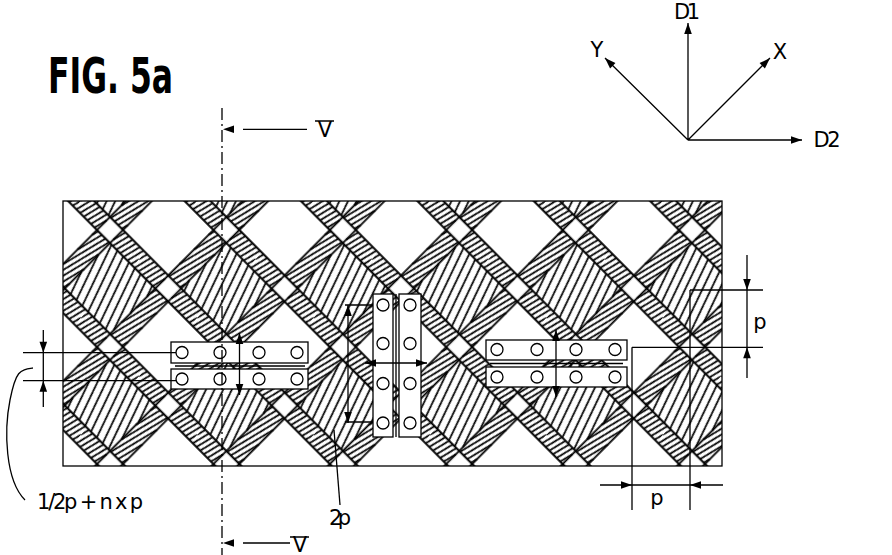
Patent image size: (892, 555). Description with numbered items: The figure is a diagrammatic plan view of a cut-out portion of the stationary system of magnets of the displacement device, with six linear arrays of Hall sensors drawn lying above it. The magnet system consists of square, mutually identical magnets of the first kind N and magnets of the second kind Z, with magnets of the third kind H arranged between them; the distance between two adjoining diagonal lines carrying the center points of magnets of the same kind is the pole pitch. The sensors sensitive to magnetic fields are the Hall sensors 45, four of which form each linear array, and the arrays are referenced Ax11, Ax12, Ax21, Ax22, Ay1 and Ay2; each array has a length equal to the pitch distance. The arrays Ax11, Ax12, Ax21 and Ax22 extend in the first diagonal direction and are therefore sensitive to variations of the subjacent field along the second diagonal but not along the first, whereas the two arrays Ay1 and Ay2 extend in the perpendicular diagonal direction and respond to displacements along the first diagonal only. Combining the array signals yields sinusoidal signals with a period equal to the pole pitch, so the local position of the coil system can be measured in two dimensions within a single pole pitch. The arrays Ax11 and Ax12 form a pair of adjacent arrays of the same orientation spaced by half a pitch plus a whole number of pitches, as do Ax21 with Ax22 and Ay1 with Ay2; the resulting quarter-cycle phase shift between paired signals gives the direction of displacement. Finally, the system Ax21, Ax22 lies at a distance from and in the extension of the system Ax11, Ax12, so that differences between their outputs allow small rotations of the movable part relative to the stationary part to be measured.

The Hall sensor 45 is at (512, 245).
The magnet of the first kind N is at (252, 262).
The magnet of the second kind Z is at (317, 253).
The magnet of the third kind H is at (300, 465).
The linear array of Hall sensors Ax11 is at (200, 342).
The linear array of Hall sensors Ax12 is at (204, 389).
The linear array of Hall sensors Ax21 is at (598, 347).
The linear array of Hall sensors Ax22 is at (595, 378).
The linear array of Hall sensors Ay1 is at (387, 440).
The linear array of Hall sensors Ay2 is at (403, 440).